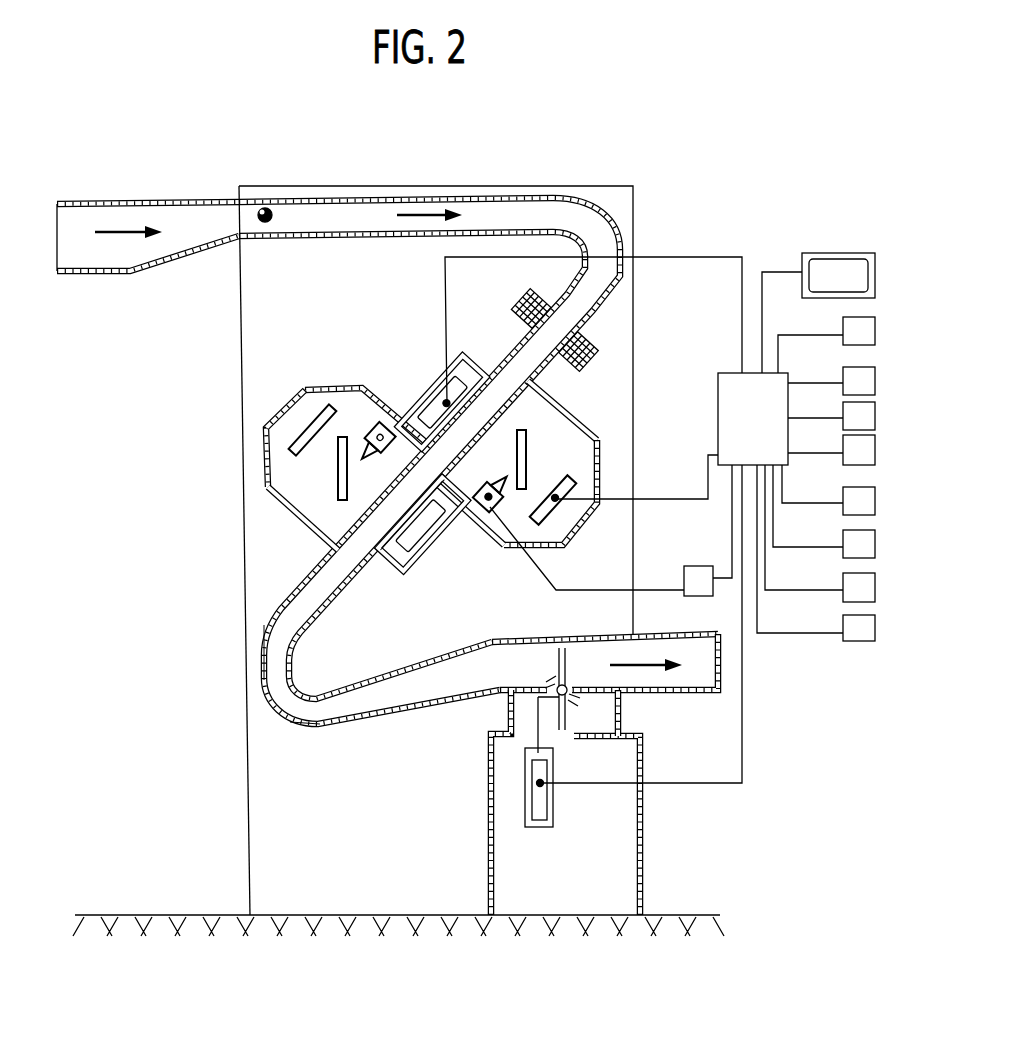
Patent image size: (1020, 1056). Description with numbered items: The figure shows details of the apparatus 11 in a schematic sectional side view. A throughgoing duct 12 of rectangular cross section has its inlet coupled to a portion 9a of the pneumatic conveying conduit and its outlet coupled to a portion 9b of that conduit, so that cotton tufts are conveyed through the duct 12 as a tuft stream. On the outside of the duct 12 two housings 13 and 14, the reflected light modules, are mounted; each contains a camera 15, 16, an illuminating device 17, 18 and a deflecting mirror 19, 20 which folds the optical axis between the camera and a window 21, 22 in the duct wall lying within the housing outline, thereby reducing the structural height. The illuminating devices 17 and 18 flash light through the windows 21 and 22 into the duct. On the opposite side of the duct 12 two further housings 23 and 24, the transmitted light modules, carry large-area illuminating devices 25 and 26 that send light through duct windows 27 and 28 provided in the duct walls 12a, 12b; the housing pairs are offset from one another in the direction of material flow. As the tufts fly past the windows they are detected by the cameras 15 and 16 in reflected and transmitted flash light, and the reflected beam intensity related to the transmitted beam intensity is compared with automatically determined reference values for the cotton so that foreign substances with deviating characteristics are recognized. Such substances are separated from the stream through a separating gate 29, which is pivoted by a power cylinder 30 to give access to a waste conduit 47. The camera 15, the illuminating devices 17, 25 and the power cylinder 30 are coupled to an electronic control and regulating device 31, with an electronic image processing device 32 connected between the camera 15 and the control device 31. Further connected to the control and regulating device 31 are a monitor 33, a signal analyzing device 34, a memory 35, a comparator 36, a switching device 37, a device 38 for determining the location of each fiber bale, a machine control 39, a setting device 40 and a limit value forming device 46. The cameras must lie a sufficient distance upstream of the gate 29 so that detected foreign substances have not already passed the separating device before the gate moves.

The portion of the conduit 9a is at (80, 255).
The portion of the conduit 9b is at (700, 670).
The apparatus 11 is at (235, 549).
The throughgoing duct 12 is at (600, 293).
The duct wall 12a is at (286, 722).
The duct wall 12b is at (270, 620).
The housing 13 is at (588, 518).
The housing 14 is at (287, 403).
The camera 15 is at (487, 508).
The camera 16 is at (373, 420).
The illuminating device 17 is at (602, 472).
The illuminating device 18 is at (300, 440).
The deflecting mirror 19 is at (527, 468).
The deflecting mirror 20 is at (337, 477).
The window 21 is at (500, 418).
The window 22 is at (368, 513).
The housing 23 is at (437, 393).
The housing 24 is at (448, 523).
The illuminating device 25 is at (413, 413).
The illuminating device 26 is at (423, 545).
The duct window 27 is at (448, 400).
The duct window 28 is at (387, 545).
The separating gate 29 is at (524, 697).
The power cylinder 30 is at (527, 812).
The electronic control and regulating device 31 is at (733, 420).
The electronic image processing device 32 is at (700, 565).
The monitor 33 is at (822, 263).
The signal analyzing device 34 is at (855, 325).
The memory 35 is at (857, 378).
The comparator 36 is at (858, 415).
The switching device 37 is at (860, 448).
The device for determining the location of each fiber bale 38 is at (857, 500).
The machine control 39 is at (858, 545).
The setting device 40 is at (860, 588).
The limit value forming device 46 is at (857, 630).
The waste conduit 47 is at (523, 875).